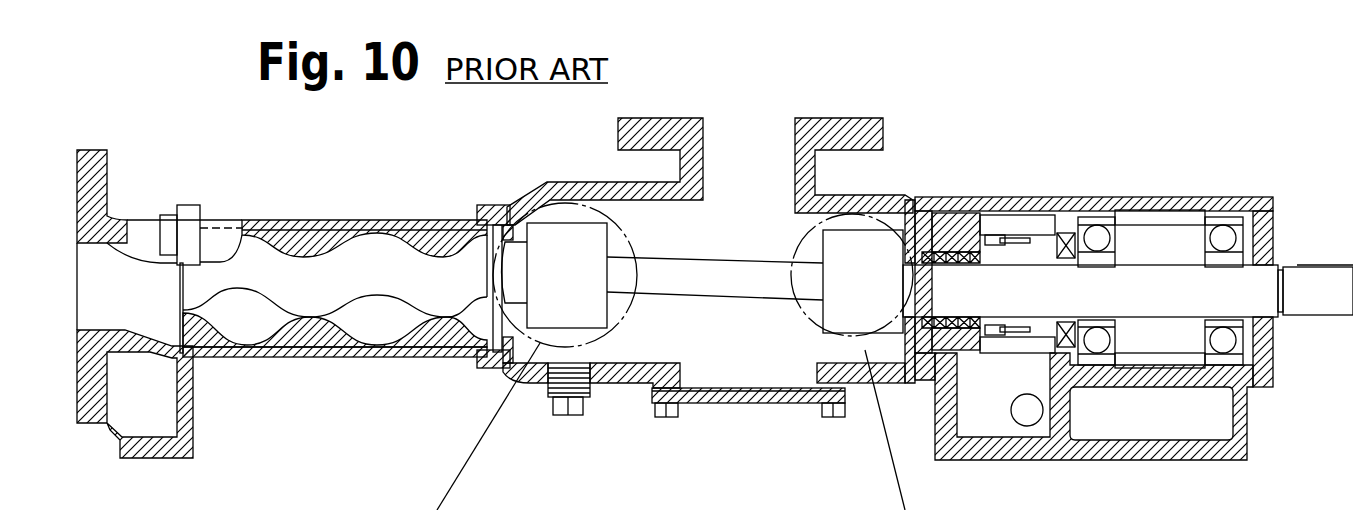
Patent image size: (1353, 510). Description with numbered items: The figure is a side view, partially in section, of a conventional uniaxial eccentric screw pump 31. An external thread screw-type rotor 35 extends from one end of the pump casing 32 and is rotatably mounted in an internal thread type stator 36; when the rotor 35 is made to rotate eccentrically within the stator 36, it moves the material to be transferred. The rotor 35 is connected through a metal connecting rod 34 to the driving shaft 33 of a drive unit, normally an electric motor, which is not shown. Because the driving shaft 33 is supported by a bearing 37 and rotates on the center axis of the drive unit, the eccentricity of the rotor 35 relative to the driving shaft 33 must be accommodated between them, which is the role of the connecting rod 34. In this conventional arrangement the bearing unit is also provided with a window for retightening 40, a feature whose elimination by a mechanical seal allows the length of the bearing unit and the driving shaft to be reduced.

The uniaxial eccentric screw pump 31 is at (945, 143).
The pump casing 32 is at (548, 192).
The driving shaft 33 is at (1250, 288).
The connecting rod 34 is at (732, 282).
The rotor 35 is at (373, 268).
The stator 36 is at (303, 235).
The bearing 37 is at (1230, 227).
The window for retightening 40 is at (1038, 237).